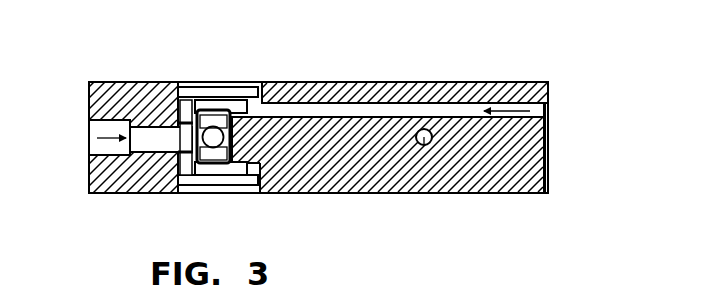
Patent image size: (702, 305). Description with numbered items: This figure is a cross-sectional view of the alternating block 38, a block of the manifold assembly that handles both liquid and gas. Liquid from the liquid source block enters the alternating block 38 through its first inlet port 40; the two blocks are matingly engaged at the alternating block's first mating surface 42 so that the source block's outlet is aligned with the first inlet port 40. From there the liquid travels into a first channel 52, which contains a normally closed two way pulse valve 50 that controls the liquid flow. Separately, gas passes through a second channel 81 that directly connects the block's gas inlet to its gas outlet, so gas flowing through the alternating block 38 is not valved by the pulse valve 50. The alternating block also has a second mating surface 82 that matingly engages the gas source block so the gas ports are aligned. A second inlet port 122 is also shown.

The alternating block 38 is at (460, 82).
The first inlet port 40 is at (92, 144).
The first mating surface 42 is at (88, 172).
The pulse valve 50 is at (198, 90).
The first channel 52 is at (161, 141).
The second channel 81 is at (351, 108).
The second mating surface 82 is at (543, 142).
The second inlet port 122 is at (424, 145).